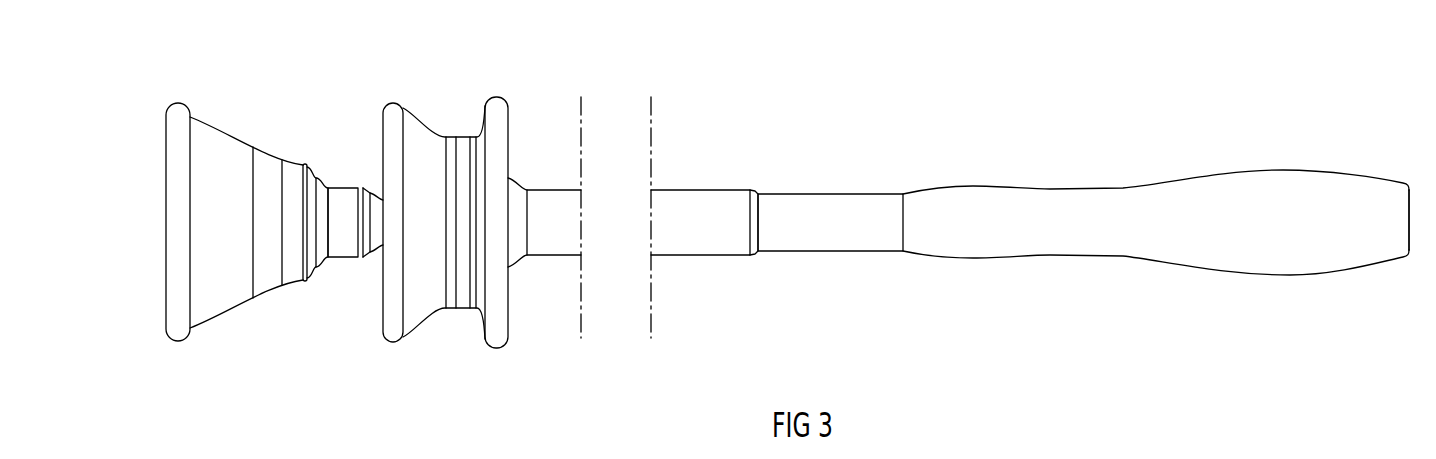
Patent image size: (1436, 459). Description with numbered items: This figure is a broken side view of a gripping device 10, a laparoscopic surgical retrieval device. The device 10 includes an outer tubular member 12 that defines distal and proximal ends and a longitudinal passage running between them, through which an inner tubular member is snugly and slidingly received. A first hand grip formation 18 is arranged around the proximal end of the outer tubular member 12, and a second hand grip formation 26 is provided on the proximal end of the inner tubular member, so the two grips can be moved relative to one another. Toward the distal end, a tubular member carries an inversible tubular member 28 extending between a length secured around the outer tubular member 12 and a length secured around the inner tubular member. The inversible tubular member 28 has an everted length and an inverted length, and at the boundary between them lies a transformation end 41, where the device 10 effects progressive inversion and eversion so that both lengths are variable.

The gripping device 10 is at (1043, 98).
The outer tubular member 12 is at (695, 191).
The first hand grip formation 18 is at (420, 127).
The second hand grip formation 26 is at (177, 103).
The inversible tubular member 28 is at (1258, 169).
The transformation end 41 is at (1410, 251).